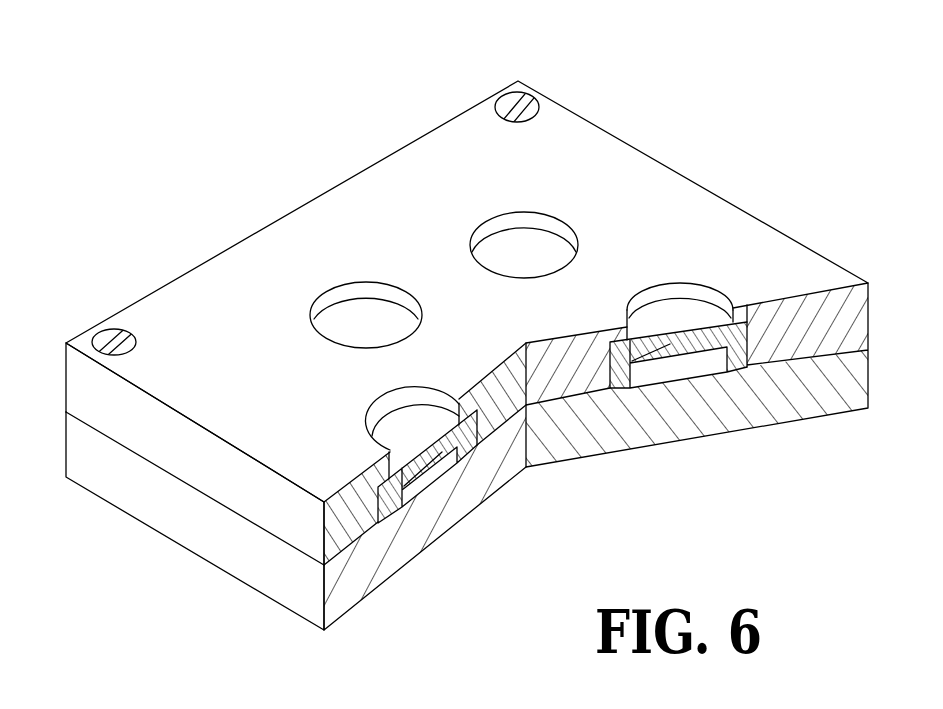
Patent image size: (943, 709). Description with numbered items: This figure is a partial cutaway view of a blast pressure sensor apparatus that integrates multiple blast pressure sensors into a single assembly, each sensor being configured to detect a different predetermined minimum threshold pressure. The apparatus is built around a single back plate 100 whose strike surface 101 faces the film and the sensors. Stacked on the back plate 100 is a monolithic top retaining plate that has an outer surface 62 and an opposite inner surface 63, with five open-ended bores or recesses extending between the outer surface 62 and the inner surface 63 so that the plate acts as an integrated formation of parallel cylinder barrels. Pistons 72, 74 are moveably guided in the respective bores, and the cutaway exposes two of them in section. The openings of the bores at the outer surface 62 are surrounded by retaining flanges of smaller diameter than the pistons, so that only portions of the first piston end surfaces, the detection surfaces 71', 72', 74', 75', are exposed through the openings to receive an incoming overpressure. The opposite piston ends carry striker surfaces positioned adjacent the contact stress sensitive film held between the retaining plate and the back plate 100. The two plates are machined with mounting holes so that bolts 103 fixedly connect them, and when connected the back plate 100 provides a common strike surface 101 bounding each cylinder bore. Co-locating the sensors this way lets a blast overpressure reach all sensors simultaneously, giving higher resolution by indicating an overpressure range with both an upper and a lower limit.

The outer surface 62 is at (257, 403).
The back plate 100 is at (158, 507).
The inner surface 63 is at (240, 518).
The strike surface 101 is at (283, 545).
The bolts 103 is at (102, 340).
The detection surface 75' is at (366, 284).
The detection surface 71' is at (539, 223).
The detection surface 72' is at (681, 287).
The detection surface 74' is at (388, 423).
The piston 72 is at (721, 400).
The piston 74 is at (437, 500).